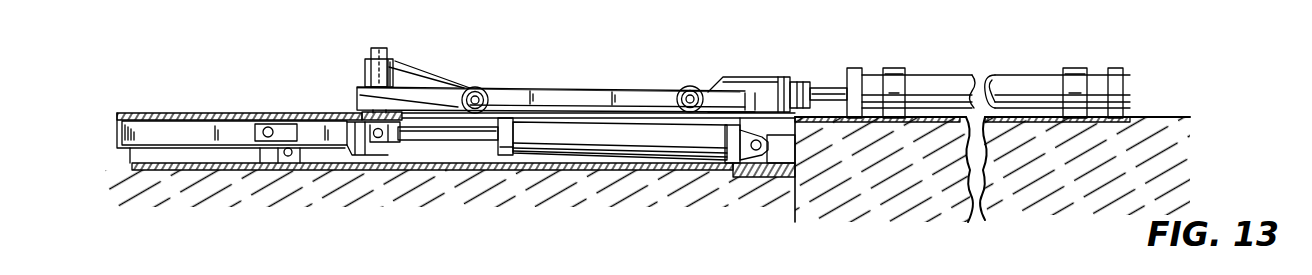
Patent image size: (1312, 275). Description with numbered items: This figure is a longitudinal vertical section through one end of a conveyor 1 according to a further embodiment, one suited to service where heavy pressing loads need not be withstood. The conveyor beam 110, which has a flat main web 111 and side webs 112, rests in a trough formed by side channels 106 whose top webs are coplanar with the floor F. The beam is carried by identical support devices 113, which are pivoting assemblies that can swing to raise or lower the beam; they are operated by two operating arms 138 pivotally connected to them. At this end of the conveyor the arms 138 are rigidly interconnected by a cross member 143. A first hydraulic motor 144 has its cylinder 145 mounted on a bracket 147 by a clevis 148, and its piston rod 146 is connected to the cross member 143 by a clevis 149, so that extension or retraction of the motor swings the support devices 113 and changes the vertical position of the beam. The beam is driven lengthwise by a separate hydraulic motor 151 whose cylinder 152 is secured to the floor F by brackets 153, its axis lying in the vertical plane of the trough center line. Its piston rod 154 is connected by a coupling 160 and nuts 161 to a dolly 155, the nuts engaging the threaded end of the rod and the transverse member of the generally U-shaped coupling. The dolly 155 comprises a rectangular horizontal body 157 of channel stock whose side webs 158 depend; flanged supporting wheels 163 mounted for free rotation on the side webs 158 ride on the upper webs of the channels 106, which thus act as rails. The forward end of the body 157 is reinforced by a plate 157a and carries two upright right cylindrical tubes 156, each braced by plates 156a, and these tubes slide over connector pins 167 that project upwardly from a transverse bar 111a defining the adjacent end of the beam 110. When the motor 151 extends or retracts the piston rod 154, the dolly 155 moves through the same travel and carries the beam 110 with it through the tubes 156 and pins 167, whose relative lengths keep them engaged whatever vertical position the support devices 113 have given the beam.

The conveyor 1 is at (288, 72).
The conveyor beam 110 is at (122, 111).
The side channels 106 is at (168, 110).
The operating arms 138 is at (187, 128).
The flat main web 111 is at (245, 118).
The transverse bar 111a is at (372, 113).
The side webs 112 is at (116, 130).
The support devices 113 is at (256, 163).
The cross member 143 is at (360, 152).
The clevis 149 is at (392, 143).
The piston rod 146 is at (483, 141).
The first hydraulic motor 144 is at (630, 162).
The cylinder 145 is at (688, 143).
The clevis 148 is at (753, 162).
The bracket 147 is at (784, 160).
The upright right cylindrical tubes 156 is at (367, 60).
The connector pins 167 is at (376, 48).
The plates 156a is at (412, 62).
The plate 157a is at (442, 73).
The flanged supporting wheels 163 is at (492, 86).
The side webs 158 is at (560, 98).
The dolly 155 is at (578, 86).
The rectangular horizontal body 157 is at (633, 87).
The coupling 160 is at (762, 73).
The nuts 161 is at (812, 82).
The piston rod 154 is at (825, 87).
The brackets 153 is at (893, 70).
The cylinder 152 is at (1025, 73).
The hydraulic motor 151 is at (1130, 66).
The floor F is at (1168, 117).